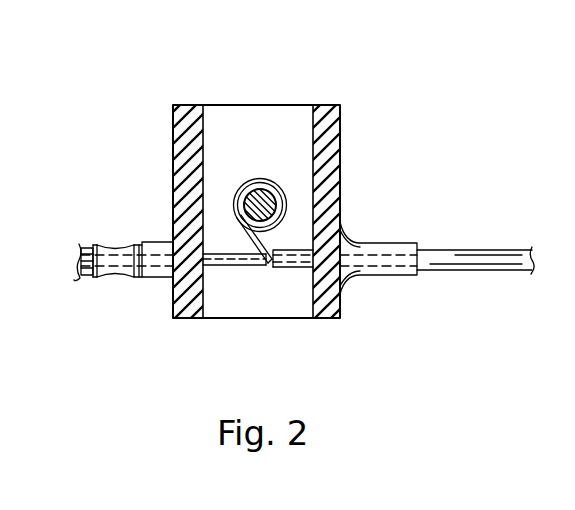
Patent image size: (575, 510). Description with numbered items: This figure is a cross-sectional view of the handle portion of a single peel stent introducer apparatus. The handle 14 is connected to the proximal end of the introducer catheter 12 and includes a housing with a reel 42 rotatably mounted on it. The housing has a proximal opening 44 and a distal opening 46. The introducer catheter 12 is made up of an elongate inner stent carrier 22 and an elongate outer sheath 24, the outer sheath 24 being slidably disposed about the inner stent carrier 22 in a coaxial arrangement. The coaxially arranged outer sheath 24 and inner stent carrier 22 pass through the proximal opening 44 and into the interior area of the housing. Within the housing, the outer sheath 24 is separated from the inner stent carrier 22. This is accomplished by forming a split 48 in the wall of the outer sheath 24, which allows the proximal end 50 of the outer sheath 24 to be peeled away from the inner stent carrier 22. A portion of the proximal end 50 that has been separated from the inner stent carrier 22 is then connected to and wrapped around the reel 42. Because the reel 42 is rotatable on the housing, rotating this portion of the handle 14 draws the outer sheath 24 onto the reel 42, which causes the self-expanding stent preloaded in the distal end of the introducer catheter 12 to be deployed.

The introducer catheter 12 is at (480, 250).
The handle 14 is at (435, 118).
The inner stent carrier 22 is at (222, 253).
The outer sheath 24 is at (288, 268).
The reel 42 is at (258, 184).
The proximal opening 44 is at (297, 105).
The distal opening 46 is at (167, 242).
The split 48 is at (270, 268).
The proximal end 50 is at (235, 227).